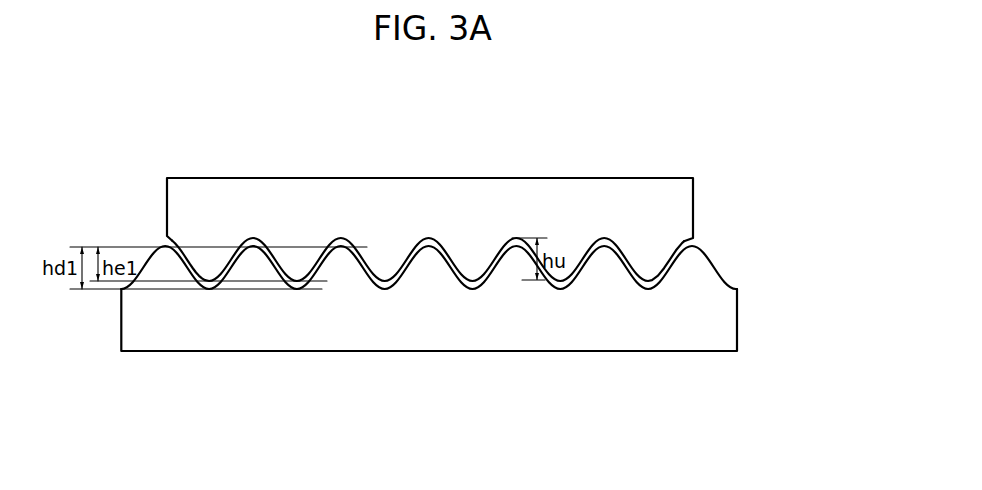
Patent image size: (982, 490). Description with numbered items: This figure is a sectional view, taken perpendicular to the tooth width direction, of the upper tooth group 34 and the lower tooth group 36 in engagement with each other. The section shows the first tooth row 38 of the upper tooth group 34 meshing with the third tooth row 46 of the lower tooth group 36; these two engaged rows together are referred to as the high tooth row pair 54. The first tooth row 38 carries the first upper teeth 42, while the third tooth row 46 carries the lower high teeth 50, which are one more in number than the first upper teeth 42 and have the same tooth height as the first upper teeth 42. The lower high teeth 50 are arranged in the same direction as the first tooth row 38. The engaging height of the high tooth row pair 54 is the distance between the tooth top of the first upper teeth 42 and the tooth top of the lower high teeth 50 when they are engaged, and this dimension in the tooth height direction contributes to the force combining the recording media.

The upper tooth group 34 is at (628, 177).
The lower tooth group 36 is at (682, 351).
The first tooth row 38 is at (701, 243).
The third tooth row 46 is at (458, 267).
The first upper teeth 42 is at (385, 267).
The lower high teeth 50 is at (342, 268).
The high tooth row pair 54 is at (476, 233).